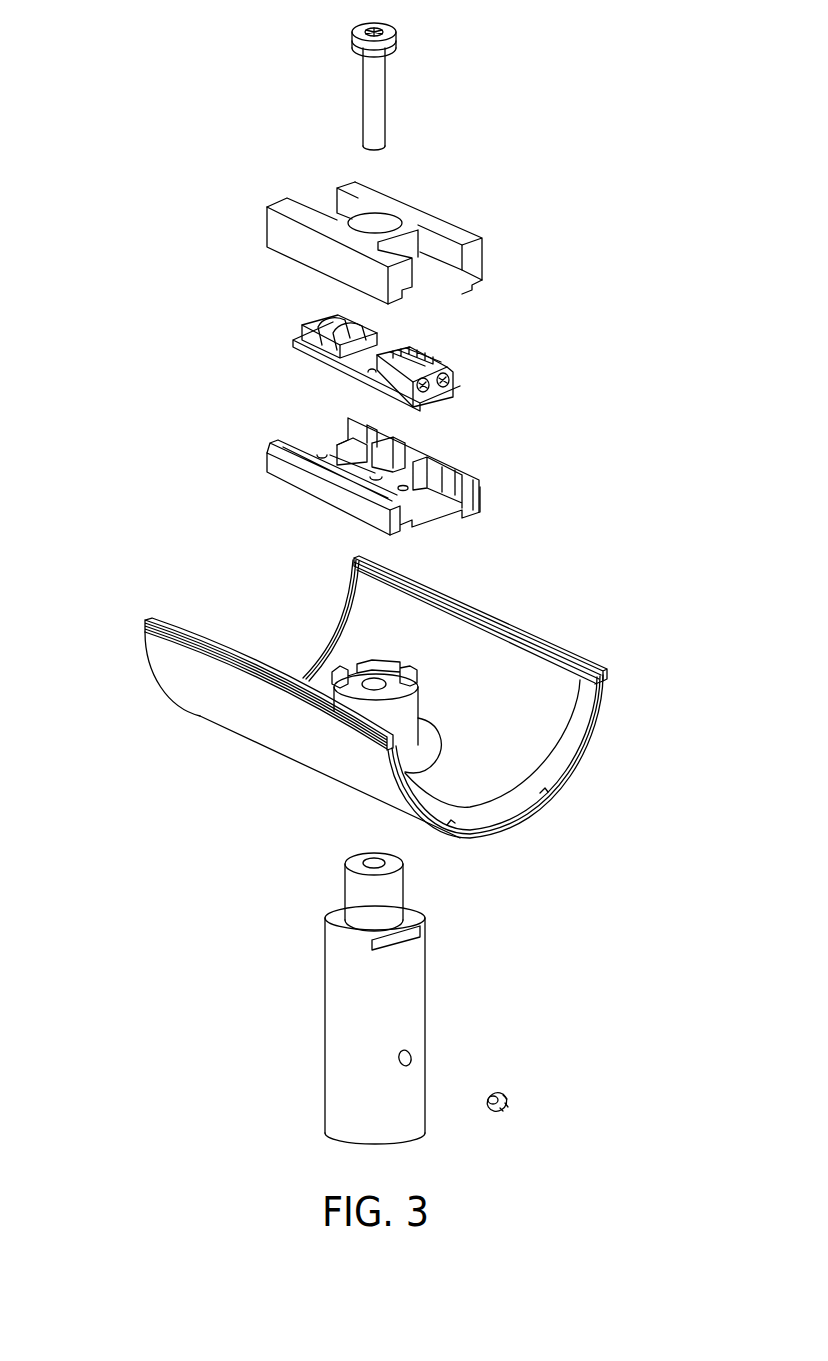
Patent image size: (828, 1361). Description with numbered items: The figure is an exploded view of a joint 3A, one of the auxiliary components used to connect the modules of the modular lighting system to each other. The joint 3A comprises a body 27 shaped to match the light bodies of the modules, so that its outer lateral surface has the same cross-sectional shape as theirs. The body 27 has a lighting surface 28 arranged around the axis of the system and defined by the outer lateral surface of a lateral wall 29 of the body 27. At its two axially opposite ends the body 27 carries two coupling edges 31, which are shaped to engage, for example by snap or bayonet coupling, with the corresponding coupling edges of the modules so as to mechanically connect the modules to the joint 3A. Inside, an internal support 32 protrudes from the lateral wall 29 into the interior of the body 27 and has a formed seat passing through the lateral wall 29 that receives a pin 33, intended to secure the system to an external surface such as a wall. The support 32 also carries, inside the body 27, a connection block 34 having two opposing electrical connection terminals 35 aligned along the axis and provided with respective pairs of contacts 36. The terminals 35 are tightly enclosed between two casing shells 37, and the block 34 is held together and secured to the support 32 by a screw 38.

The body 27 is at (255, 743).
The lighting surface 28 is at (317, 762).
The lateral wall 29 is at (555, 676).
The coupling edges 31 is at (343, 607).
The internal support 32 is at (413, 703).
The pin 33 is at (410, 977).
The connection block 34 is at (520, 297).
The terminals 35 is at (322, 343).
The contacts 36 is at (440, 393).
The casing shells 37 is at (415, 212).
The screw 38 is at (380, 82).
The joint 3A is at (176, 306).